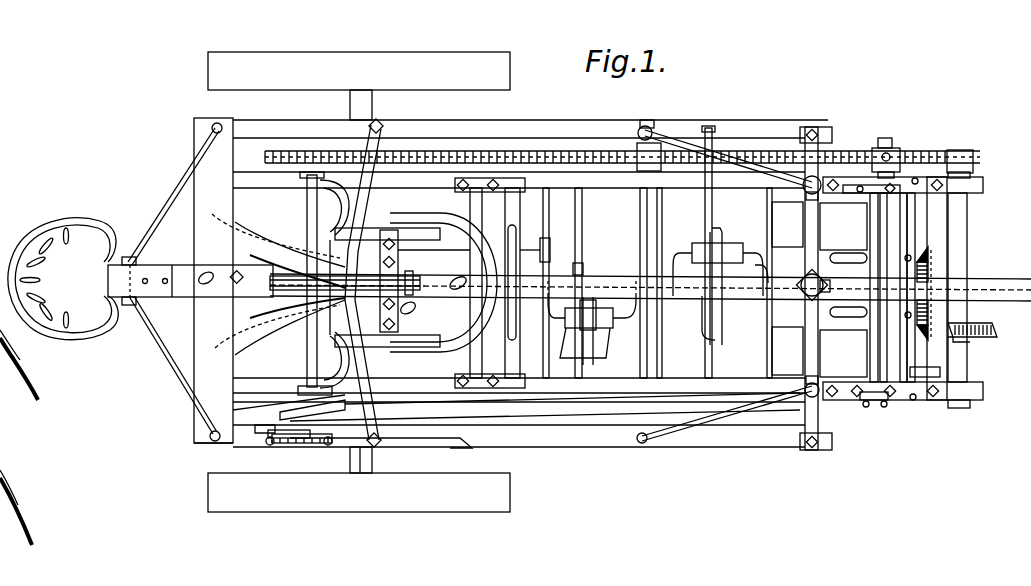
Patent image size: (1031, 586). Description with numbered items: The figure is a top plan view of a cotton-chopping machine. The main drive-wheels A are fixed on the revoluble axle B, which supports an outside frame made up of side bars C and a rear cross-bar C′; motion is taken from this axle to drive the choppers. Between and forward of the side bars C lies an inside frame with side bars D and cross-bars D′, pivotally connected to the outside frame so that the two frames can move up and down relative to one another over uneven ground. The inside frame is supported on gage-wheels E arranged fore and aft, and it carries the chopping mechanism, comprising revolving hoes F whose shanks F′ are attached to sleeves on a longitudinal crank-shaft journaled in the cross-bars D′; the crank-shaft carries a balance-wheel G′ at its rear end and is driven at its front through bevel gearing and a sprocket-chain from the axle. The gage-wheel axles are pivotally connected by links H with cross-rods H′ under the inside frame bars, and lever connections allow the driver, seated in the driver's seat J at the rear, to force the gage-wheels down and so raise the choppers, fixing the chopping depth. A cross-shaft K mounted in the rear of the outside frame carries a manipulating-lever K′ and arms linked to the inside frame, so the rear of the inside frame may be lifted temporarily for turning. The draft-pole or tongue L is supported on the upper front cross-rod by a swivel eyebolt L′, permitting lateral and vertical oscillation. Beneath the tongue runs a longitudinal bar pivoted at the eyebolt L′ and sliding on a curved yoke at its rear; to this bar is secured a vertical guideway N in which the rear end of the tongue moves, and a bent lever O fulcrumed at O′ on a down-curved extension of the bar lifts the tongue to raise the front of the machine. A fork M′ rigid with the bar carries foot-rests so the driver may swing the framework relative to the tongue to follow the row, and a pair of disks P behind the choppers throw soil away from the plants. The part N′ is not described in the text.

The main drive-wheels A is at (280, 52).
The revoluble shaft or axle B is at (350, 104).
The side bars of main outside frame C is at (528, 120).
The rear cross-bar C′ is at (612, 450).
The side bars of inside frame D is at (684, 378).
The cross-bars of inside frame D′ is at (632, 188).
The gage-wheels E is at (628, 289).
The revolving hoes or blades F is at (752, 297).
The hoe shank F′ is at (592, 327).
The balance-wheel G′ is at (520, 240).
The links H is at (671, 283).
The cross-rods H′ is at (583, 268).
The driver's seat J is at (58, 220).
The cross-shaft K is at (345, 362).
The manipulating-lever K′ is at (388, 462).
The draft-pole or tongue L is at (650, 289).
The eyebolt L′ is at (798, 290).
The fork M′ is at (405, 335).
The vertical guideway N is at (396, 281).
The link N′ is at (448, 240).
The bent lever O is at (369, 286).
The fulcrum O′ is at (250, 270).
The disks P is at (252, 228).